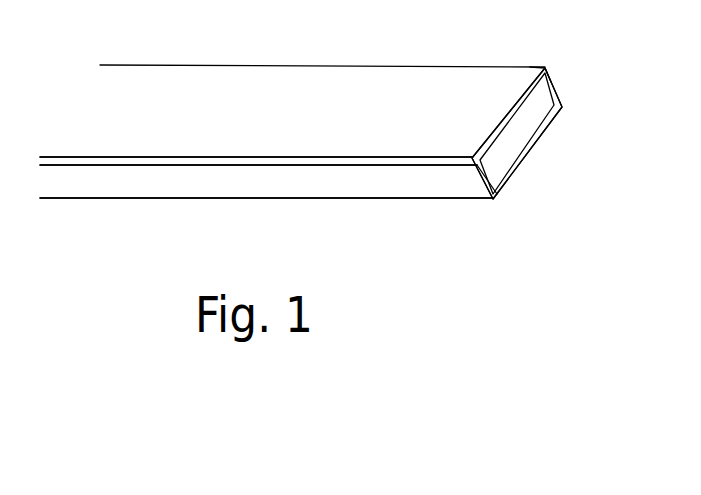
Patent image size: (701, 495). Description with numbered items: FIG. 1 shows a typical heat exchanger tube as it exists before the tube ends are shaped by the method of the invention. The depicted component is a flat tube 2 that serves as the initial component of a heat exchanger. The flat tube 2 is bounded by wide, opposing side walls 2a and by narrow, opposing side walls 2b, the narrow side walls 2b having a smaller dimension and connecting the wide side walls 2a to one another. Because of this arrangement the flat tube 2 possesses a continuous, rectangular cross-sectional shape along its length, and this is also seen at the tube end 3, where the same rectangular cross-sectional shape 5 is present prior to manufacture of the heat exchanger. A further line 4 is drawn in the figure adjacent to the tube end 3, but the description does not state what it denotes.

The flat tube 2 is at (87, 218).
The wide side walls 2a is at (275, 128).
The narrow side walls 2b is at (405, 185).
The tube end 3 is at (525, 66).
The upper line / support surface 4 is at (160, 63).
The rectangular cross-sectional shape 5 is at (557, 123).